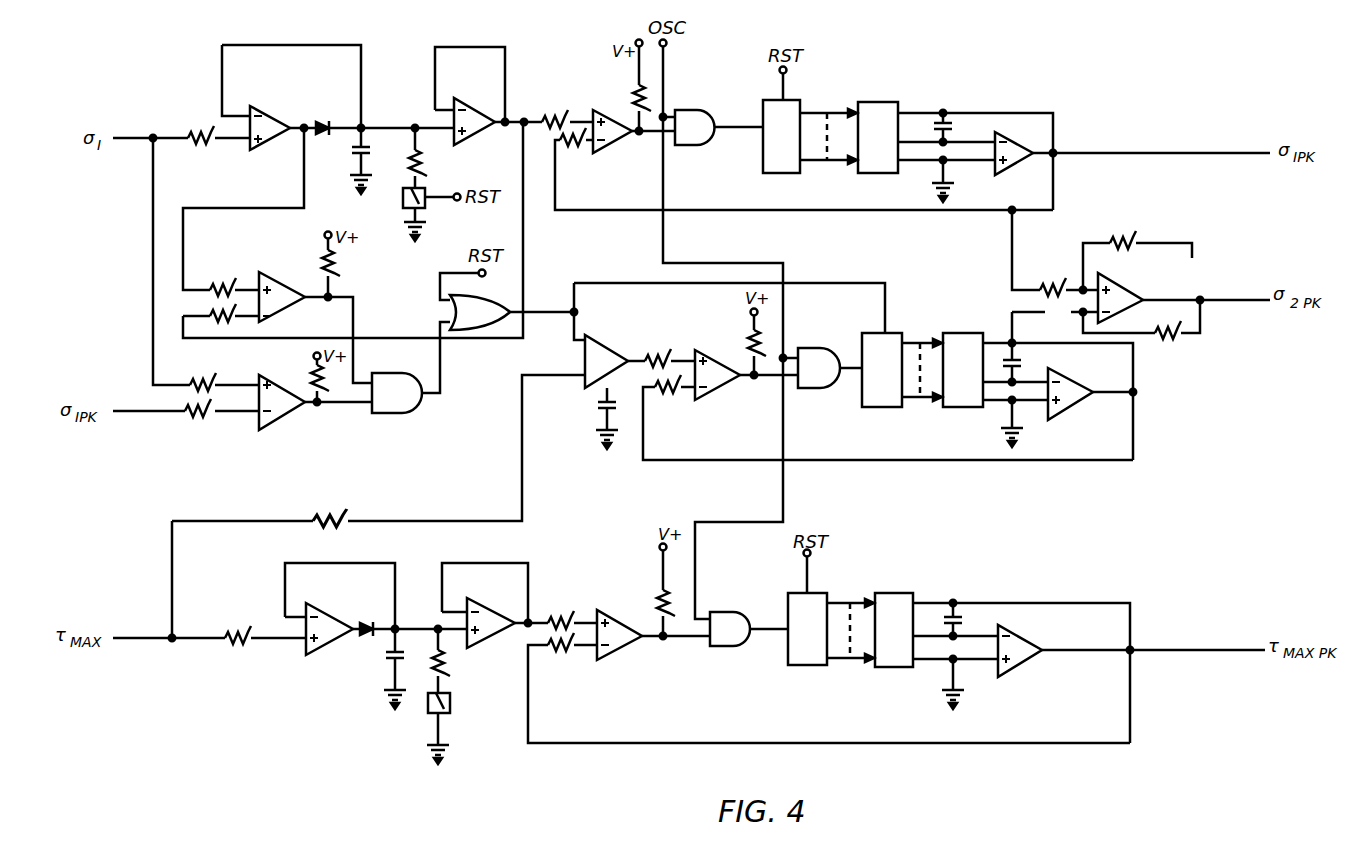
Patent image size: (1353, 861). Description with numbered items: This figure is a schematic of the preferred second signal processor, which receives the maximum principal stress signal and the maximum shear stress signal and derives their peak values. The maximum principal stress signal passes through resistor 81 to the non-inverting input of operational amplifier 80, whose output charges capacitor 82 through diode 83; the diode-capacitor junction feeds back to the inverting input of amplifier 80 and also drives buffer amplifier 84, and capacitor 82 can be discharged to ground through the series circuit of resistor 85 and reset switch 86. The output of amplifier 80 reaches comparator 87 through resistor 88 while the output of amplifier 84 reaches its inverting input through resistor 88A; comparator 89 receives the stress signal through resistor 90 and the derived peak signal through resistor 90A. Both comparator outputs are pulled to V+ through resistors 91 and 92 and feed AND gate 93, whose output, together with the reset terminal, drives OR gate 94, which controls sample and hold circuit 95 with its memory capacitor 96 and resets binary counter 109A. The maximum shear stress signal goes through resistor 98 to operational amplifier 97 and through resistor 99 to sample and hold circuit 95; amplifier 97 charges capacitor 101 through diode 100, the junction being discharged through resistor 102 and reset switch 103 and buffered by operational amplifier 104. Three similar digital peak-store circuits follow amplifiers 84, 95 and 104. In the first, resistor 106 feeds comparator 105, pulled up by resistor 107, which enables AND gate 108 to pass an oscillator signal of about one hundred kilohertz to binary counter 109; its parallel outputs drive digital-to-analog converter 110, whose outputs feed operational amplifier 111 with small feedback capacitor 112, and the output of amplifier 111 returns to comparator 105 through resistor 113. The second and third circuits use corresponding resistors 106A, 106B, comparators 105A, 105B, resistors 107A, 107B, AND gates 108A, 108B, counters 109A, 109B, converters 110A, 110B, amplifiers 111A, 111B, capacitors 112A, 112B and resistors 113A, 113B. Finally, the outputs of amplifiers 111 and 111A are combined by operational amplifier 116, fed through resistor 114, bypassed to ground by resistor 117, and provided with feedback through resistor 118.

The operational amplifier 80 is at (270, 146).
The resistor 81 is at (192, 134).
The capacitor 82 is at (355, 153).
The diode 83 is at (320, 122).
The amplifier 84 is at (480, 136).
The resistor 85 is at (420, 162).
The reset switch 86 is at (428, 206).
The comparator 87 is at (280, 272).
The resistor 88 is at (221, 285).
The resistor 88A is at (208, 317).
The comparator 89 is at (282, 428).
The resistor 90 is at (219, 382).
The resistor 90A is at (210, 416).
The resistor 91 is at (333, 264).
The resistor 92 is at (322, 400).
The AND gate 93 is at (410, 414).
The OR gate 94 is at (452, 312).
The sample and hold circuit 95 is at (600, 338).
The memory capacitor 96 is at (600, 405).
The operational amplifier 97 is at (317, 650).
The resistor 98 is at (238, 642).
The resistor 99 is at (343, 518).
The diode 100 is at (365, 624).
The capacitor 101 is at (390, 660).
The resistor 102 is at (442, 668).
The reset switch 103 is at (428, 712).
The operational amplifier 104 is at (480, 648).
The comparator 105 is at (614, 148).
The comparator 105A is at (722, 400).
The comparator 105B is at (614, 660).
The resistor 106 is at (555, 116).
The resistor 106A is at (658, 355).
The resistor 106B is at (560, 618).
The resistor 107 is at (632, 100).
The resistor 107A is at (750, 341).
The resistor 107B is at (658, 600).
The AND gate 108 is at (688, 146).
The AND gate 108A is at (805, 390).
The AND gate 108B is at (730, 612).
The binary counter 109 is at (762, 105).
The binary counter 109A is at (888, 408).
The binary counter 109B is at (788, 666).
The digital-to-analog converter 110 is at (858, 105).
The digital-to-analog converter 110A is at (958, 408).
The digital-to-analog converter 110B is at (890, 592).
The operational amplifier 111 is at (1015, 170).
The operational amplifier 111A is at (1067, 418).
The operational amplifier 111B is at (1024, 675).
The capacitor 112 is at (950, 122).
The capacitor 112A is at (1020, 362).
The capacitor 112B is at (958, 615).
The resistor 113 is at (572, 146).
The resistor 113A is at (666, 392).
The resistor 113B is at (555, 651).
The resistor 114 is at (1045, 289).
The operational amplifier 116 is at (1124, 285).
The resistor 117 is at (1138, 243).
The resistor 118 is at (1182, 336).